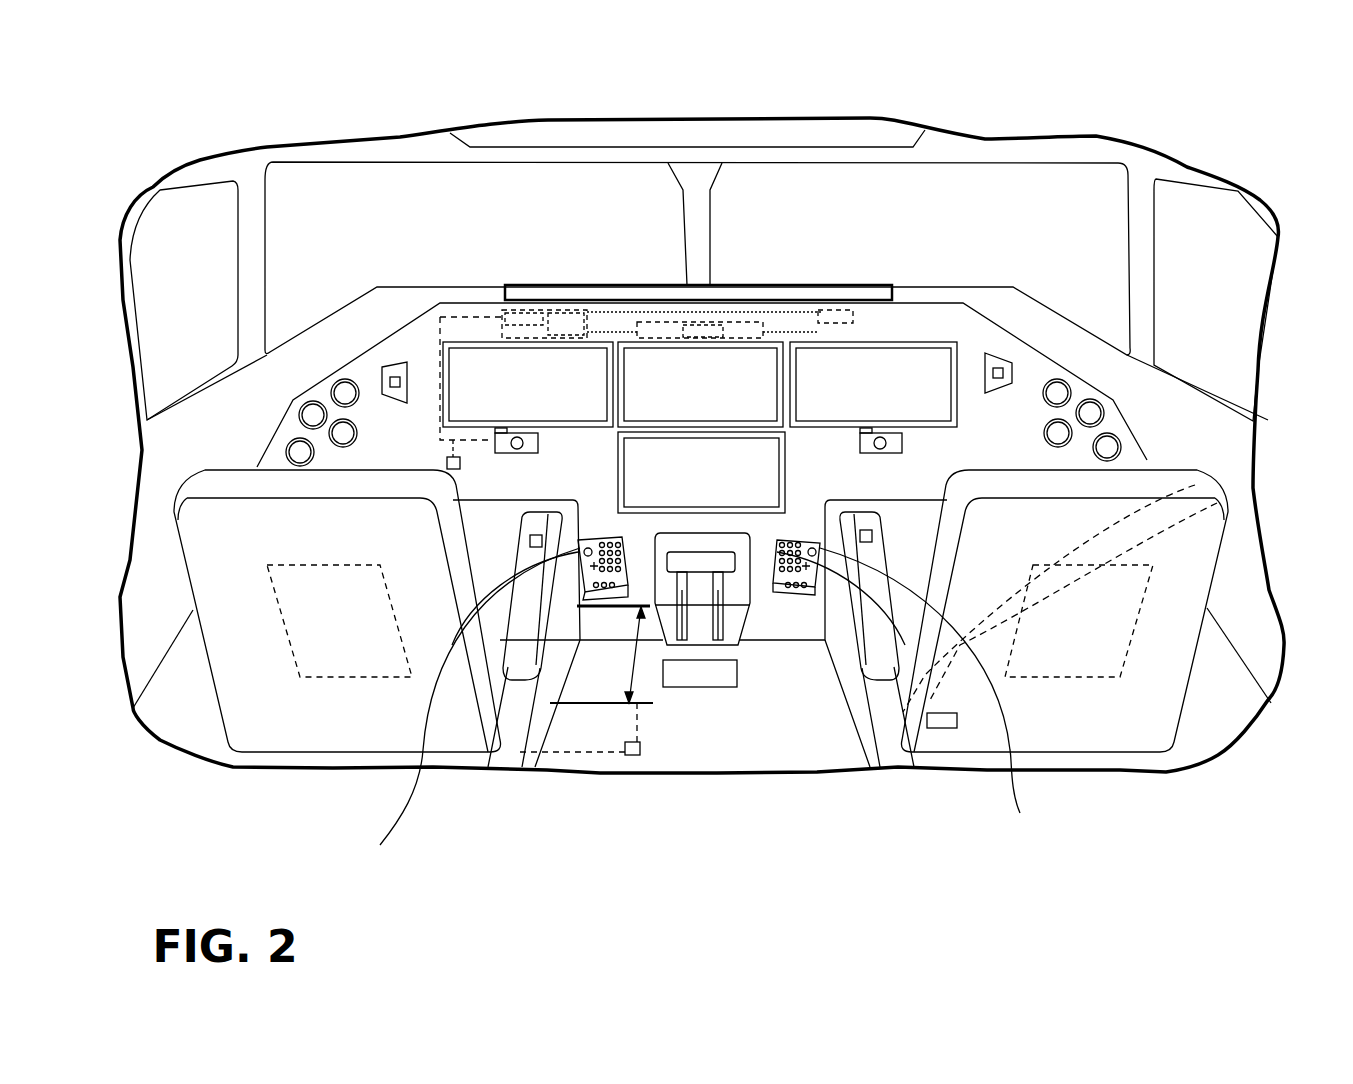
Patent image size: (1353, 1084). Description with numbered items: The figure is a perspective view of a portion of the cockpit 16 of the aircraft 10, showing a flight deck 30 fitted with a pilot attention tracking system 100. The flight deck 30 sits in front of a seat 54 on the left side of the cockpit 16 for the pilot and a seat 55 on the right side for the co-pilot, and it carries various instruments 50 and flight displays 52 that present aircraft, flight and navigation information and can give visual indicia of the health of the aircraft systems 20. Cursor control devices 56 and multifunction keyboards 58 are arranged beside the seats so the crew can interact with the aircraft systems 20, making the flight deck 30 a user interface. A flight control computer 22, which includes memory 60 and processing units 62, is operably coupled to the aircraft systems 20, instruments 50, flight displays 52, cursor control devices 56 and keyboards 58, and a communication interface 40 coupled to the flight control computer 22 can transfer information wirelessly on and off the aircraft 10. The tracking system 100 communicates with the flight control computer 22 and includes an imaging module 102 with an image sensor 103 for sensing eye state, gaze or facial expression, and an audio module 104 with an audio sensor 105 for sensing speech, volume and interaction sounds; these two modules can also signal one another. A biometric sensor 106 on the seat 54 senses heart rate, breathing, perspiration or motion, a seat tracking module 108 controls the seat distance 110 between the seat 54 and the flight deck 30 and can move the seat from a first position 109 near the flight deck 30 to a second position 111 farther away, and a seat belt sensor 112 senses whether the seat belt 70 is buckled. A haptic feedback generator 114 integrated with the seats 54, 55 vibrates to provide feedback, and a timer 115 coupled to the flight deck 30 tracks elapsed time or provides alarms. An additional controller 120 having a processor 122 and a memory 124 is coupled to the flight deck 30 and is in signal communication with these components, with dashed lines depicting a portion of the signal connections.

The aircraft 10 is at (235, 83).
The cockpit 16 is at (400, 137).
The aircraft systems 20 is at (540, 313).
The flight control computer 22 is at (763, 307).
The flight deck 30 is at (300, 390).
The communication interface 40 is at (700, 310).
The instruments 50 is at (297, 449).
The flight displays 52 is at (577, 335).
The seat 54 is at (280, 717).
The seat 55 is at (1103, 703).
The cursor control devices 56 is at (706, 709).
The multifunction keyboards 58 is at (600, 592).
The memory 60 is at (647, 425).
The processing units 62 is at (730, 318).
The seat belt 70 is at (1150, 518).
The tracking system 100 is at (1165, 140).
The imaging module 102 is at (540, 440).
The image sensor 103 is at (522, 450).
The audio module 104 is at (390, 385).
The audio sensor 105 is at (393, 387).
The biometric sensor 106 is at (530, 540).
The seat tracking module 108 is at (630, 757).
The first position 109 is at (643, 605).
The seat distance 110 is at (640, 652).
The second position 111 is at (620, 703).
The seat belt sensor 112 is at (947, 730).
The haptic feedback generator 114 is at (357, 677).
The timer 115 is at (460, 465).
The controller 120 is at (505, 290).
The processor 122 is at (517, 313).
The memory 124 is at (540, 317).